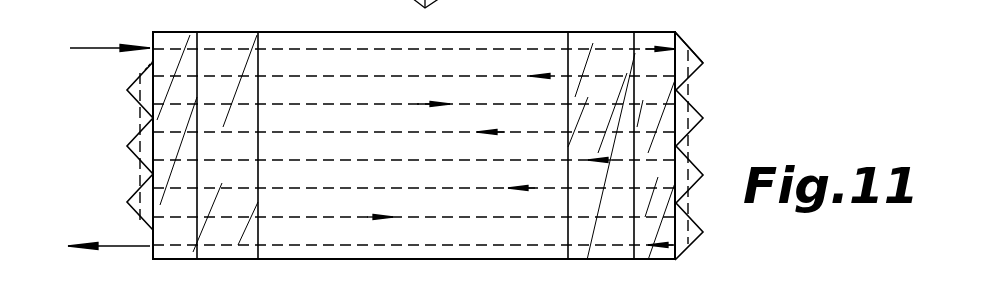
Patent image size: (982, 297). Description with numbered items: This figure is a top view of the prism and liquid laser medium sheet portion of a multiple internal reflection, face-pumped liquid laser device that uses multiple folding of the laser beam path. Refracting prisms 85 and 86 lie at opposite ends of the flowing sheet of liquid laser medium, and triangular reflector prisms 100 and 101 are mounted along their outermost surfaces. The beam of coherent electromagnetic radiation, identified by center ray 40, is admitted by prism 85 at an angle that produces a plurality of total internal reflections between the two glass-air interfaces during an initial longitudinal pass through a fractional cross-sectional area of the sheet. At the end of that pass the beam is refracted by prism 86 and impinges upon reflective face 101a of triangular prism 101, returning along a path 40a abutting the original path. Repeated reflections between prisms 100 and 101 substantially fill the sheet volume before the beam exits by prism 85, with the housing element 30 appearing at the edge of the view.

The center ray 40 is at (97, 48).
The path 40a is at (593, 76).
The refracting prism 85 is at (215, 33).
The refracting prism 86 is at (600, 259).
The triangular reflector prism 100 is at (127, 92).
The triangular reflector prism 101 is at (704, 64).
The reflective face 101a is at (690, 38).
The housing 30 is at (389, 5).